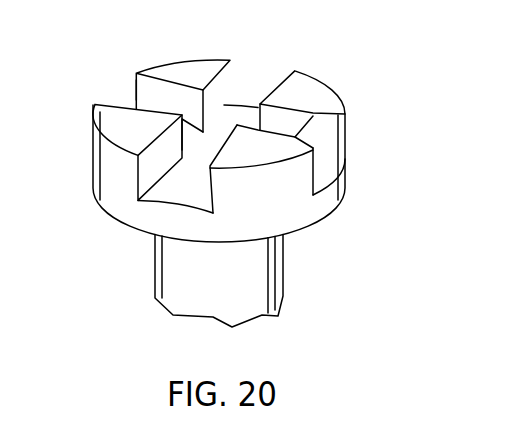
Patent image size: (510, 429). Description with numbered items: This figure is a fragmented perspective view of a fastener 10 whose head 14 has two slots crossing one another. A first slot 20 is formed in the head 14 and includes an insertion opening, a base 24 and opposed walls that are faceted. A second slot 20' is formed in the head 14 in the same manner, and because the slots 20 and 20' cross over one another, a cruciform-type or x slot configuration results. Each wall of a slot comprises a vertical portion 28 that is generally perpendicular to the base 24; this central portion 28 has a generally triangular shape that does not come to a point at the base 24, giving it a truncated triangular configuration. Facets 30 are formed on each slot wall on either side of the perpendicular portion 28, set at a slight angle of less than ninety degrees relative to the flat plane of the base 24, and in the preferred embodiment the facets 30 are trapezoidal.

The fastener 10 is at (350, 253).
The fastener head 14 is at (337, 88).
The slot 20 is at (261, 110).
The second slot 20' is at (130, 93).
The base 24 is at (173, 194).
The vertical portion 28 is at (187, 90).
The facets 30 is at (172, 103).